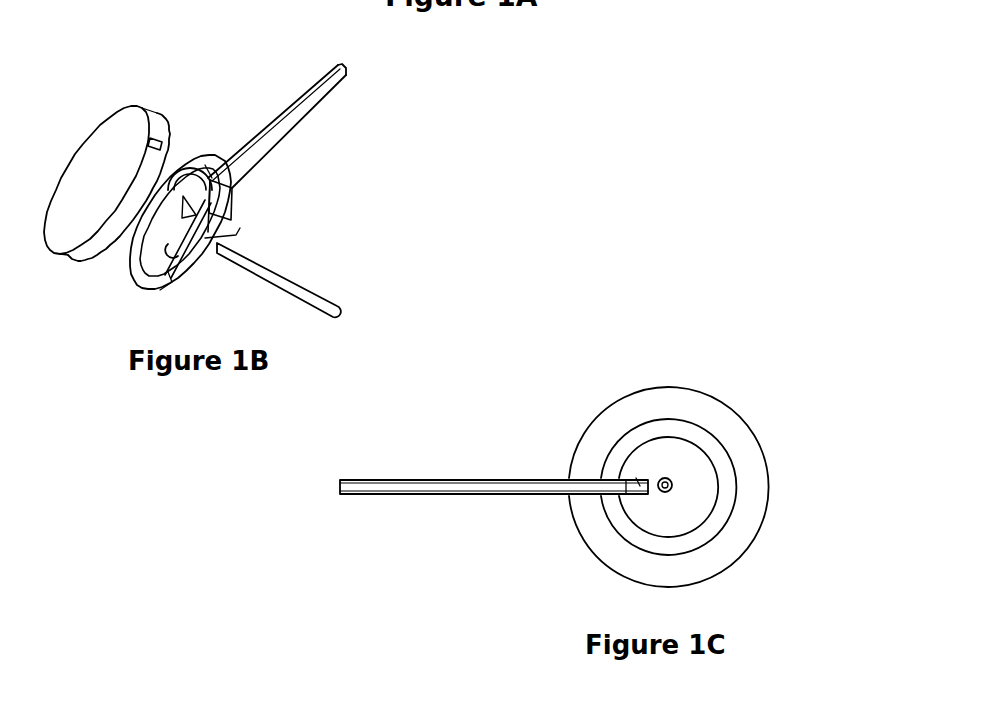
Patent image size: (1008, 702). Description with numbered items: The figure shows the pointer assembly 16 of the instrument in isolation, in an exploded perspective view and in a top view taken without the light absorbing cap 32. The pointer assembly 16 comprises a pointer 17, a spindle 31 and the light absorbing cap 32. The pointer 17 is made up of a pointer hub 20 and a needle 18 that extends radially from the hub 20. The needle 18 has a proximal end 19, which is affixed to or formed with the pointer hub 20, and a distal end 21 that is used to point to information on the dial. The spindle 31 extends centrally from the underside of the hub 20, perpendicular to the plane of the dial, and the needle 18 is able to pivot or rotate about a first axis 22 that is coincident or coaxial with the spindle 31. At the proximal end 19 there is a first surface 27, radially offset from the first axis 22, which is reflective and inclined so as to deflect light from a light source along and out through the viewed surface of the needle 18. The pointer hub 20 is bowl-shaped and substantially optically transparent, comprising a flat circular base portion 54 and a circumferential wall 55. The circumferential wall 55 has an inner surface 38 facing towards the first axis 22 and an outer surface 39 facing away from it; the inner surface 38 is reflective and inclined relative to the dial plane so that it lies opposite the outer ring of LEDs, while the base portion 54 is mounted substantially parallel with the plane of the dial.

In FIG. 1B, the pointer assembly 16 is at (62, 80).
In FIG. 1B, the pointer 17 is at (239, 120).
In FIG. 1C, the pointer 17 is at (627, 332).
In FIG. 1B, the needle 18 is at (290, 120).
In FIG. 1C, the needle 18 is at (446, 497).
In FIG. 1B, the proximal end 19 is at (200, 160).
In FIG. 1B, the pointer hub 20 is at (121, 277).
In FIG. 1C, the pointer hub 20 is at (700, 458).
In FIG. 1B, the distal end 21 is at (347, 70).
In FIG. 1C, the first axis 22 is at (670, 491).
In FIG. 1B, the first surface 27 is at (232, 220).
In FIG. 1C, the first surface 27 is at (638, 479).
In FIG. 1B, the spindle 31 is at (300, 270).
In FIG. 1C, the spindle 31 is at (674, 484).
In FIG. 1B, the light absorbing cap 32 is at (122, 110).
In FIG. 1B, the inner surface 38 is at (168, 146).
In FIG. 1C, the inner surface 38 is at (696, 432).
In FIG. 1B, the outer surface 39 is at (207, 235).
In FIG. 1B, the flat circular base portion 54 is at (176, 256).
In FIG. 1B, the circumferential wall 55 is at (155, 290).